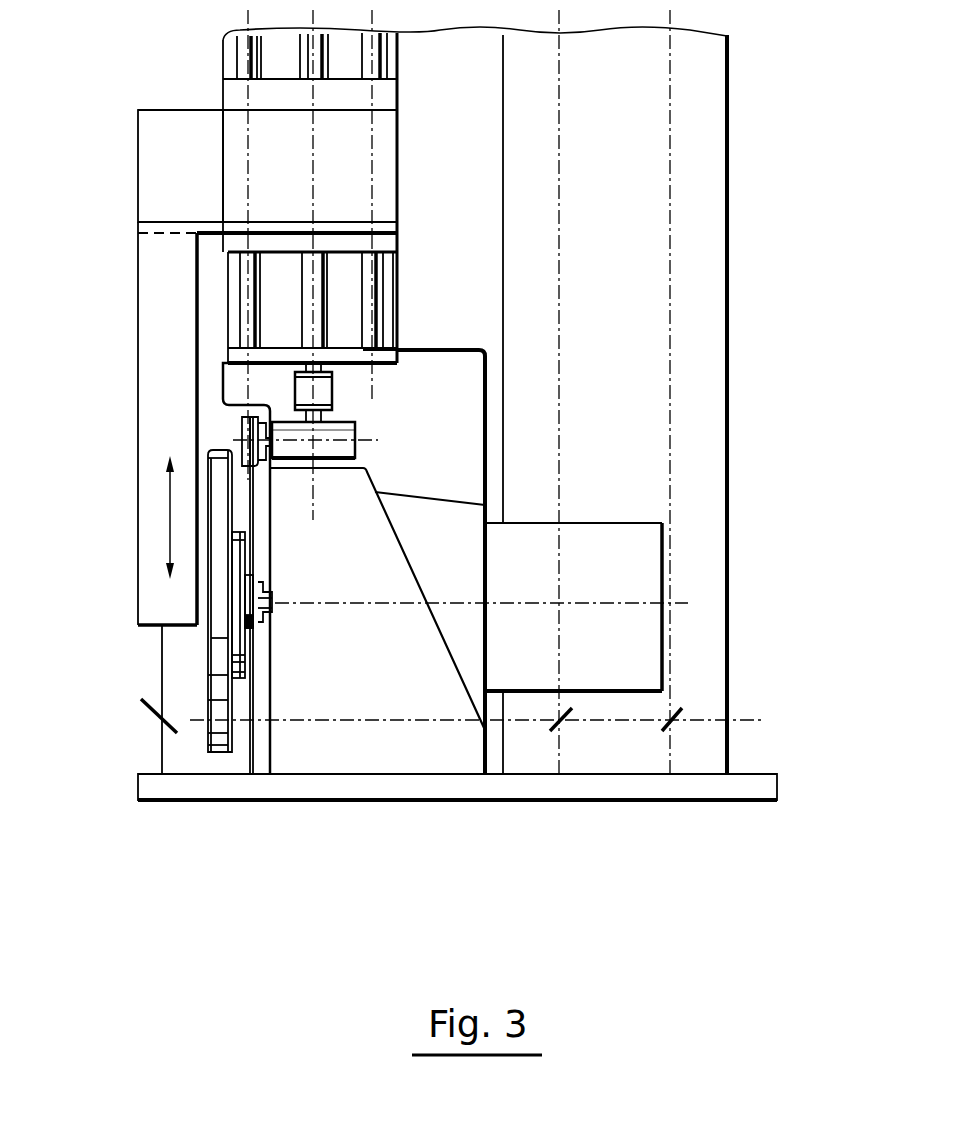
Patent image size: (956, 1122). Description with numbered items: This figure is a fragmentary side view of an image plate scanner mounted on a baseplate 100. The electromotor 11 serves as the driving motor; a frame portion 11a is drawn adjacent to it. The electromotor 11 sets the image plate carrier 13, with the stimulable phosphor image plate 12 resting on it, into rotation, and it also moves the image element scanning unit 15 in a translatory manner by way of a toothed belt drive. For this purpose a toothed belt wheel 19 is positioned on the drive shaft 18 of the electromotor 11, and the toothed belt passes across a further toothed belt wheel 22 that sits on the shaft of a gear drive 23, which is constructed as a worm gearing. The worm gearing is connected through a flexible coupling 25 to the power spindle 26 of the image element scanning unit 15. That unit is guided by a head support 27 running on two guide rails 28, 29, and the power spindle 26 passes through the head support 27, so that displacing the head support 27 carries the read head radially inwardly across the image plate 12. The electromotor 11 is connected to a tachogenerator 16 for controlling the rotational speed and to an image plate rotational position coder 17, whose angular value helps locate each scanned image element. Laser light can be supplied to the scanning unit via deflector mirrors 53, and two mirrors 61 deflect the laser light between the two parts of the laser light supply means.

The electromotor 11 is at (422, 522).
The frame base portion 11a is at (397, 740).
The stimulable phosphor image plate 12 is at (213, 750).
The image plate carrier 13 is at (244, 700).
The image element scanning unit 15 is at (148, 578).
The tachogenerator 16 is at (520, 538).
The image plate rotational position coder 17 is at (630, 547).
The drive shaft 18 is at (268, 607).
The toothed belt wheel 19 is at (252, 628).
The toothed belt wheel 22 is at (243, 426).
The gear drive 23 is at (352, 430).
The flexible coupling 25 is at (335, 387).
The power spindle 26 is at (316, 290).
The head support 27 is at (150, 187).
The guide rail 28 is at (247, 298).
The guide rail 29 is at (378, 292).
The deflector mirror 53 is at (185, 717).
The mirror 61 is at (567, 722).
The baseplate 100 is at (615, 790).